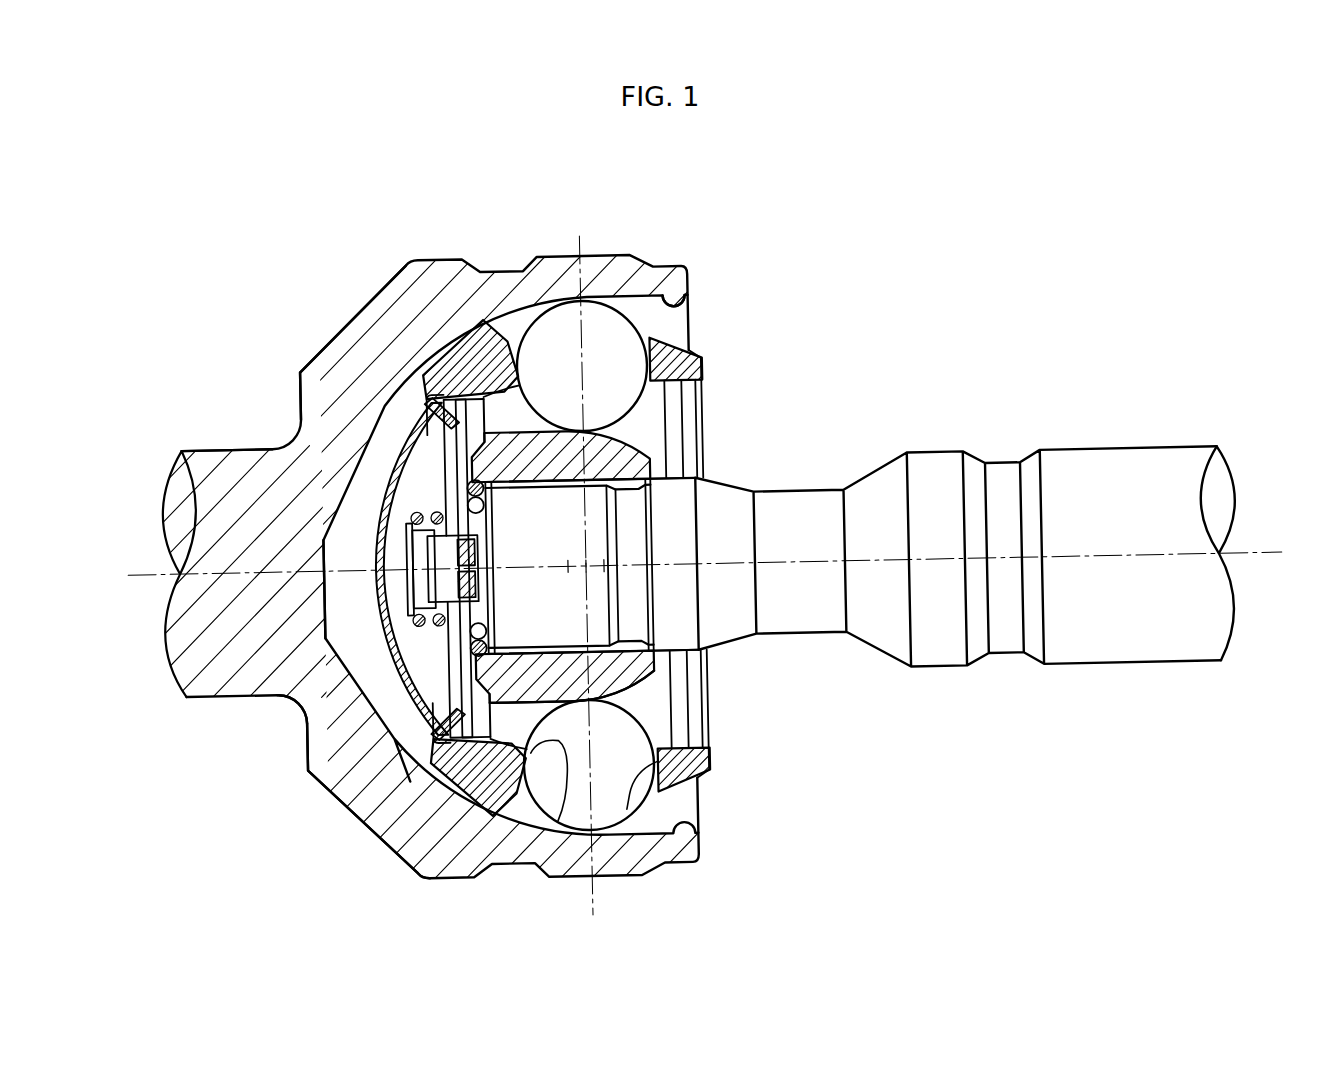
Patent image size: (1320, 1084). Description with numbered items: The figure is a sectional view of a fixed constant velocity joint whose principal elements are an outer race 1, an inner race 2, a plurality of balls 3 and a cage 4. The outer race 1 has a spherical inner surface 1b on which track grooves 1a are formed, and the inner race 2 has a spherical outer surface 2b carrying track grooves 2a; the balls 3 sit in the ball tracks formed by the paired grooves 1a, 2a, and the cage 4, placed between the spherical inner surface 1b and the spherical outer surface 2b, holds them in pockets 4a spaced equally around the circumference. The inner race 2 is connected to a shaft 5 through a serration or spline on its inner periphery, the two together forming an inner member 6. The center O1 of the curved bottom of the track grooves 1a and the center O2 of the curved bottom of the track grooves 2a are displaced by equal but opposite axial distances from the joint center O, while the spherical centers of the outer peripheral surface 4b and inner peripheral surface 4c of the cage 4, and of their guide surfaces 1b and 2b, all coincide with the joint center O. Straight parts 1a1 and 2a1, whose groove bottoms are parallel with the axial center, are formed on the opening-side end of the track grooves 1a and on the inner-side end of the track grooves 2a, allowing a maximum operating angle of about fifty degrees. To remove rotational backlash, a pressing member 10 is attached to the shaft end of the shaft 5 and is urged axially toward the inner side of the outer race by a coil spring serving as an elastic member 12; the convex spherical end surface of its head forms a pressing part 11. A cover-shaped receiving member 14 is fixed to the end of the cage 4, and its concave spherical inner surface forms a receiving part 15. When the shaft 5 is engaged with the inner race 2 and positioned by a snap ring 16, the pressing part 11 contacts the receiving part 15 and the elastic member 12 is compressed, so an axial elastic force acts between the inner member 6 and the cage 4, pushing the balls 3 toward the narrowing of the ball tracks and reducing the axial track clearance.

The outer race 1 is at (338, 337).
The track grooves of the outer race 1a is at (507, 803).
The straight part of the outer race track groove 1a1 is at (696, 300).
The spherical inner surface of the outer race 1b is at (525, 304).
The inner race 2 is at (636, 443).
The track grooves of the inner race 2a is at (658, 687).
The straight part of the inner race track groove 2a1 is at (394, 353).
The spherical outer surface of the inner race 2b is at (511, 384).
The balls 3 is at (608, 328).
The cage 4 is at (481, 350).
The pockets 4a is at (629, 771).
The outer peripheral surface of the cage 4b is at (458, 818).
The inner peripheral surface of the cage 4c is at (555, 826).
The shaft 5 is at (975, 446).
The inner member 6 is at (303, 755).
The pressing member 10 is at (280, 697).
The pressing part 11 is at (321, 615).
The elastic member 12 is at (400, 470).
The receiving member 14 is at (396, 500).
The receiving part 15 is at (328, 510).
The snap ring 16 is at (405, 425).
The joint center O is at (597, 553).
The outer race track center O1 is at (612, 571).
The inner race track center O2 is at (431, 650).